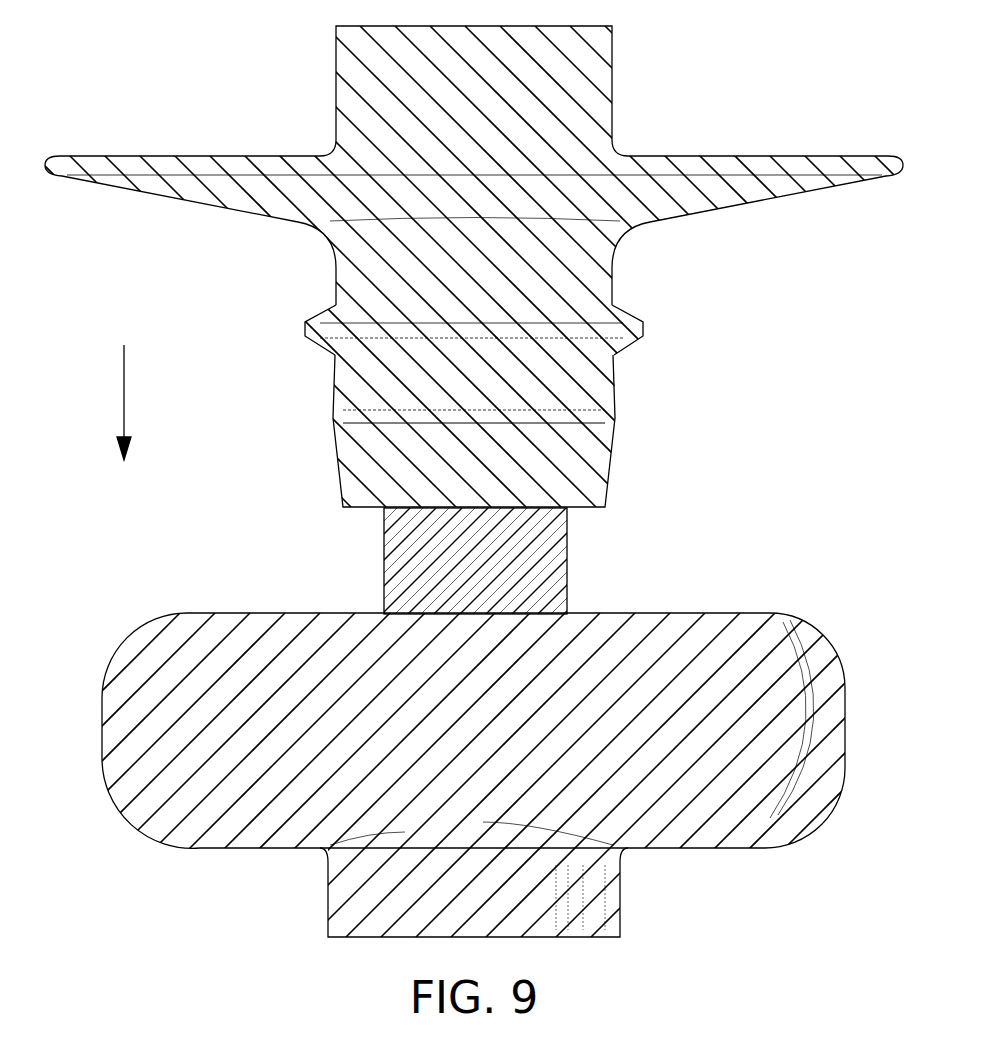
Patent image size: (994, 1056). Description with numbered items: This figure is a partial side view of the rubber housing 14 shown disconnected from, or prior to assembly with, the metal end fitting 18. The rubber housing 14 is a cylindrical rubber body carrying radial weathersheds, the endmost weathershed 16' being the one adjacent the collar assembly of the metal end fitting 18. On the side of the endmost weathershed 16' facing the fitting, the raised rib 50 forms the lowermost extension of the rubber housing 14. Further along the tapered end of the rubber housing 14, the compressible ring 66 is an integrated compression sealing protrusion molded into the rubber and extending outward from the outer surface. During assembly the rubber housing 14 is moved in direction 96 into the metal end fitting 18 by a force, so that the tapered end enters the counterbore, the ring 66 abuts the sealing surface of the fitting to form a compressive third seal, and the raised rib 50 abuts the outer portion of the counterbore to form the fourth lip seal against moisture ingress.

The rubber housing 14 is at (334, 272).
The endmost weathershed 16' is at (474, 182).
The raised rib 50 is at (646, 330).
The ring 66 is at (590, 428).
The metal end fitting 18 is at (102, 722).
The direction 96 is at (124, 395).